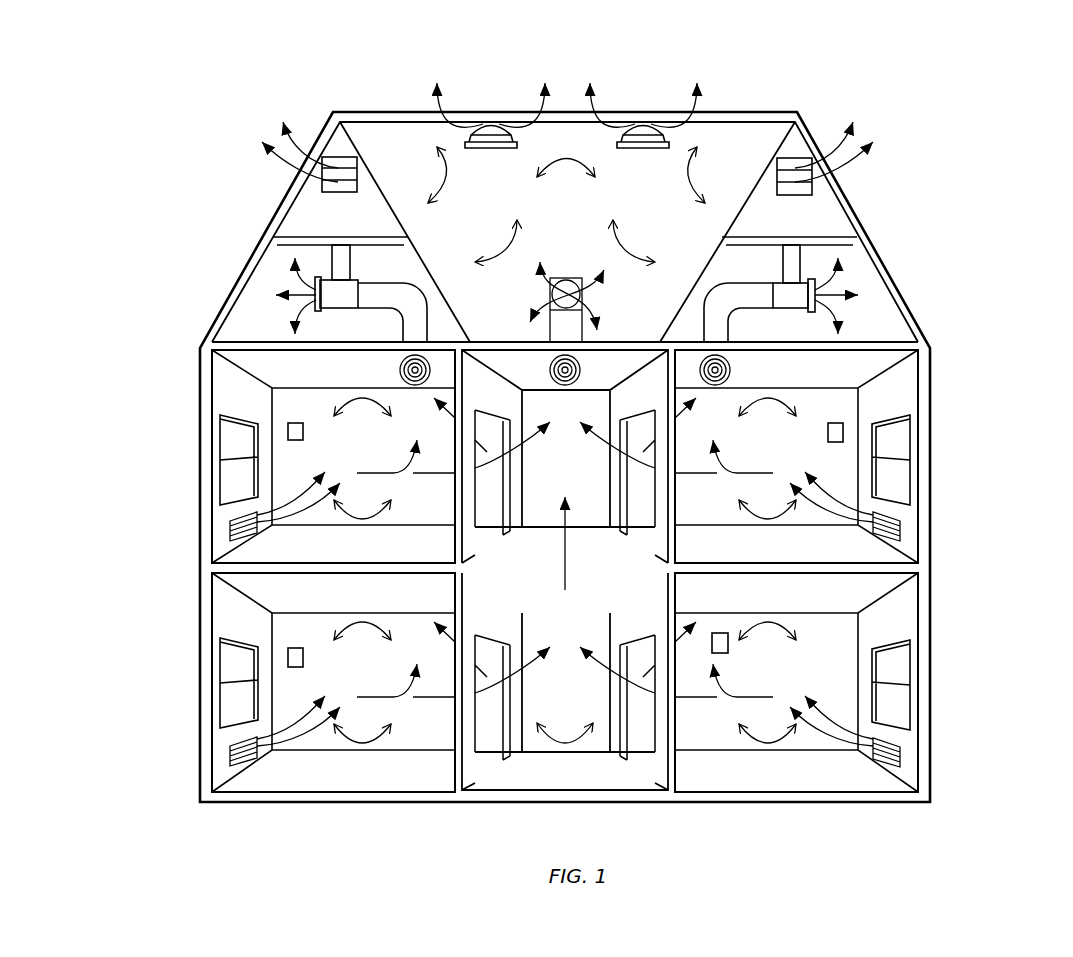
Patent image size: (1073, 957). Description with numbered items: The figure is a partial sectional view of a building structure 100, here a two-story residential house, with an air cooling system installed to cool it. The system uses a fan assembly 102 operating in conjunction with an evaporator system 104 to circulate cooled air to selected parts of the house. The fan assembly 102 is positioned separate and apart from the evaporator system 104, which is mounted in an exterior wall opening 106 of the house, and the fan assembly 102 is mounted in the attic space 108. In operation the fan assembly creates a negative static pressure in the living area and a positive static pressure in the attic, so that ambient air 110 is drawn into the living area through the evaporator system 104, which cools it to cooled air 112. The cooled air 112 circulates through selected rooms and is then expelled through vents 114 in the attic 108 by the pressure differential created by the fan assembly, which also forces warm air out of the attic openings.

The building structure 100 is at (990, 115).
The fan assembly 102 is at (392, 293).
The evaporator system 104 is at (230, 535).
The exterior wall opening 106 is at (245, 507).
The attic space 108 is at (278, 330).
The ambient air 110 is at (230, 520).
The cooled air 112 is at (305, 487).
The vents 114 is at (337, 193).